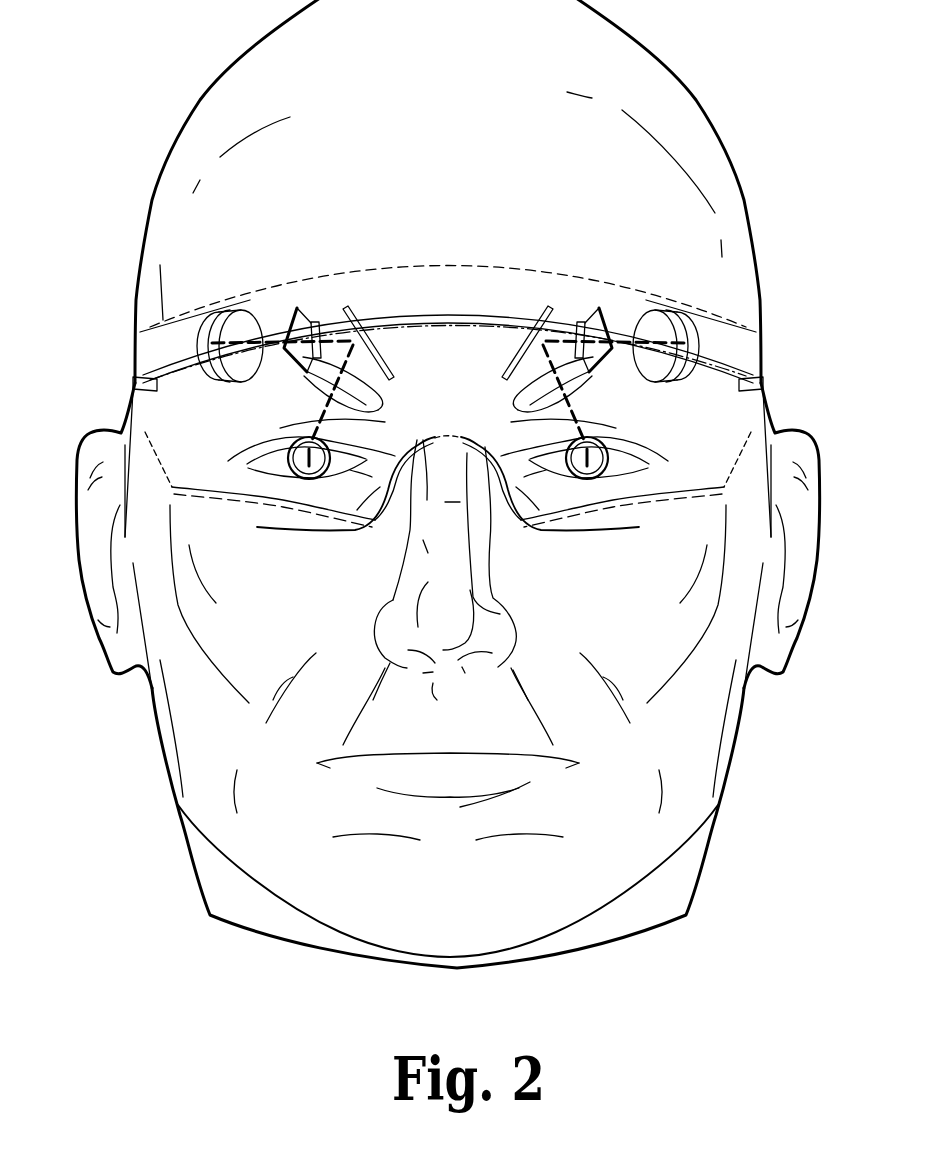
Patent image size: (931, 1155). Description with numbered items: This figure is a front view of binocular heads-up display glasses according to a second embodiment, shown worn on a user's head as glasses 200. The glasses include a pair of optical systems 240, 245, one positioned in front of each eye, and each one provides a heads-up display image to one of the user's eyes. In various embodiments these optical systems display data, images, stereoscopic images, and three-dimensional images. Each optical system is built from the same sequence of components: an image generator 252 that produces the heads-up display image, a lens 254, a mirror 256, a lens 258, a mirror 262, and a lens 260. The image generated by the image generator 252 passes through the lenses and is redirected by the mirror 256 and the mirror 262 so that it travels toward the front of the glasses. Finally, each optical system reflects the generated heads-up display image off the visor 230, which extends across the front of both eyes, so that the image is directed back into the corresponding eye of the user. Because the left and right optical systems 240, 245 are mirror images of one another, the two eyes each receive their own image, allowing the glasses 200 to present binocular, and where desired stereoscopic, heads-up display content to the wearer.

The head-mounted display device 200 is at (100, 331).
The visor 230 is at (243, 503).
The optical system 240 is at (336, 289).
The optical system 245 is at (560, 289).
The image generator 252 is at (297, 308).
The lens 254 is at (247, 388).
The mirror 256 is at (203, 380).
The lens 258 is at (313, 322).
The lens 260 is at (310, 387).
The mirror 262 is at (350, 307).